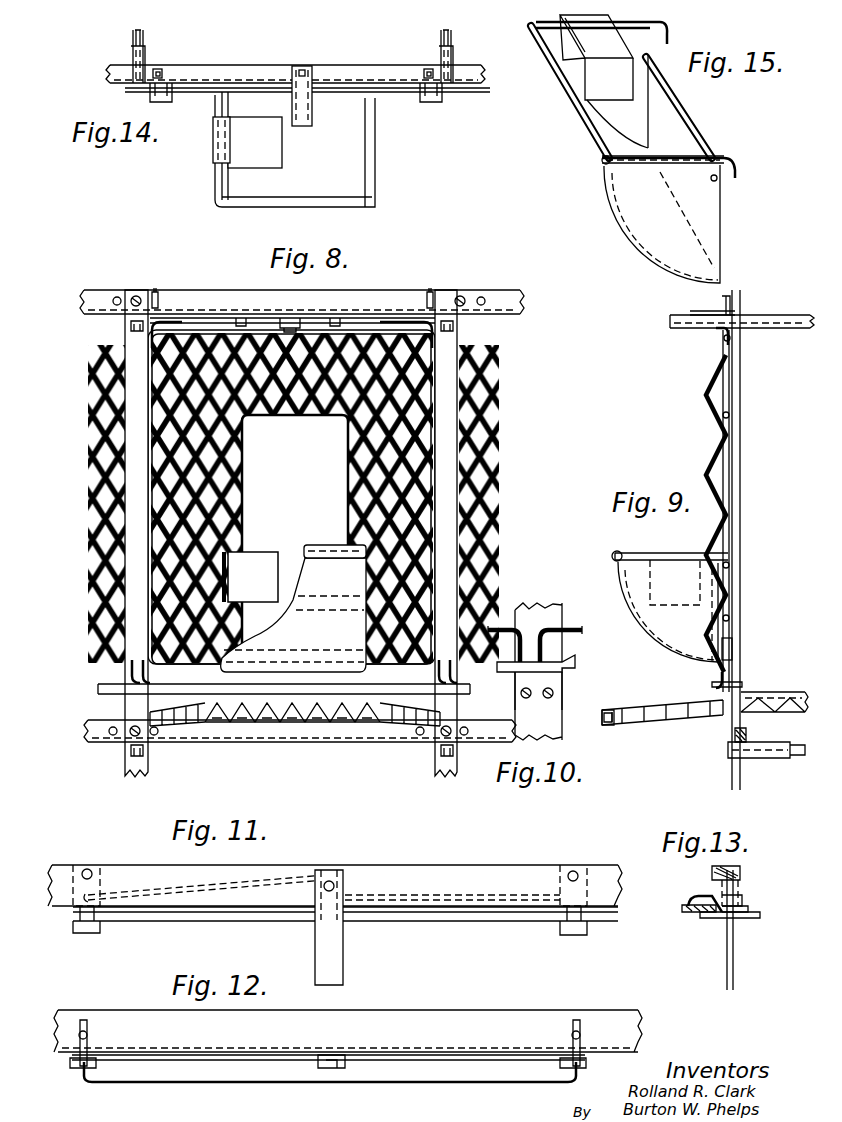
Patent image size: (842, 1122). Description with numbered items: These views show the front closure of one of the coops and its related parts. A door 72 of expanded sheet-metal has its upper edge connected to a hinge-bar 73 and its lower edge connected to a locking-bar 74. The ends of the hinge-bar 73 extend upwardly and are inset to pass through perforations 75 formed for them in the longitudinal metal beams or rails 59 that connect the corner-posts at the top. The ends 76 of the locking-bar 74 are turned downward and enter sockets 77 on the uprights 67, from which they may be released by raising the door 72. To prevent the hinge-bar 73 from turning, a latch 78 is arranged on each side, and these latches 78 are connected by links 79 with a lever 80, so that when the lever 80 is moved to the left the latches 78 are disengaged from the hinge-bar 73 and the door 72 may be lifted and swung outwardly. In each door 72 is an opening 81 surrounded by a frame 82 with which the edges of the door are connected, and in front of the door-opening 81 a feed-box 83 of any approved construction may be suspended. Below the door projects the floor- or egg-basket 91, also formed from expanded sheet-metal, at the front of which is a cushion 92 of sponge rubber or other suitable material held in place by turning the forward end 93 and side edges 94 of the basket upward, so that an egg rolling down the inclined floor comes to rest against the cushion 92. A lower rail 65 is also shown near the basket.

In FIG. 14, the longitudinal metal beam or rail 59 is at (266, 66).
In FIG. 8, the longitudinal metal beam or rail 59 is at (232, 298).
In FIG. 9, the longitudinal metal beam or rail 59 is at (745, 318).
In FIG. 11, the longitudinal metal beam or rail 59 is at (450, 866).
In FIG. 12, the longitudinal metal beam or rail 59 is at (442, 1010).
In FIG. 13, the longitudinal metal beam or rail 59 is at (696, 914).
In FIG. 8, the lower rail 65 is at (348, 742).
In FIG. 9, the lower rail 65 is at (748, 738).
In FIG. 14, the upright 67 is at (128, 92).
In FIG. 8, the upright 67 is at (458, 343).
In FIG. 10, the upright 67 is at (566, 736).
In FIG. 9, the upright 67 is at (741, 607).
In FIG. 8, the door 72 is at (298, 416).
In FIG. 9, the door 72 is at (736, 396).
In FIG. 14, the hinge-bar 73 is at (400, 94).
In FIG. 8, the hinge-bar 73 is at (360, 326).
In FIG. 9, the hinge-bar 73 is at (735, 314).
In FIG. 11, the hinge-bar 73 is at (156, 921).
In FIG. 12, the hinge-bar 73 is at (206, 1062).
In FIG. 13, the hinge-bar 73 is at (748, 920).
In FIG. 8, the locking-bar 74 is at (335, 658).
In FIG. 9, the locking-bar 74 is at (732, 658).
In FIG. 8, the perforation 75 is at (172, 286).
In FIG. 12, the perforation 75 is at (88, 1030).
In FIG. 13, the perforation 75 is at (712, 914).
In FIG. 8, the end of the locking-bar 76 is at (128, 676).
In FIG. 10, the end of the locking-bar 76 is at (524, 628).
In FIG. 9, the end of the locking-bar 76 is at (718, 693).
In FIG. 10, the socket 77 is at (520, 658).
In FIG. 9, the socket 77 is at (740, 688).
In FIG. 14, the latch 78 is at (167, 100).
In FIG. 8, the latch 78 is at (170, 323).
In FIG. 9, the latch 78 is at (728, 336).
In FIG. 11, the latch 78 is at (88, 935).
In FIG. 12, the latch 78 is at (92, 1070).
In FIG. 13, the latch 78 is at (740, 888).
In FIG. 8, the link 79 is at (237, 322).
In FIG. 11, the link 79 is at (142, 886).
In FIG. 12, the link 79 is at (255, 1084).
In FIG. 13, the link 79 is at (748, 906).
In FIG. 14, the lever 80 is at (312, 118).
In FIG. 8, the lever 80 is at (281, 322).
In FIG. 9, the lever 80 is at (672, 318).
In FIG. 11, the lever 80 is at (315, 946).
In FIG. 12, the lever 80 is at (334, 1070).
In FIG. 13, the lever 80 is at (728, 976).
In FIG. 8, the opening 81 is at (243, 476).
In FIG. 8, the frame 82 is at (348, 474).
In FIG. 9, the frame 82 is at (738, 462).
In FIG. 14, the feed-box 83 is at (378, 182).
In FIG. 15, the feed-box 83 is at (632, 228).
In FIG. 8, the feed-box 83 is at (324, 548).
In FIG. 9, the feed-box 83 is at (660, 648).
In FIG. 8, the floor- or egg-basket 91 is at (298, 722).
In FIG. 9, the floor- or egg-basket 91 is at (642, 722).
In FIG. 8, the cushion 92 is at (266, 722).
In FIG. 9, the cushion 92 is at (612, 724).
In FIG. 9, the forward end of the basket 93 is at (602, 712).
In FIG. 8, the side edge of the basket 94 is at (150, 712).
In FIG. 9, the side edge of the basket 94 is at (662, 708).